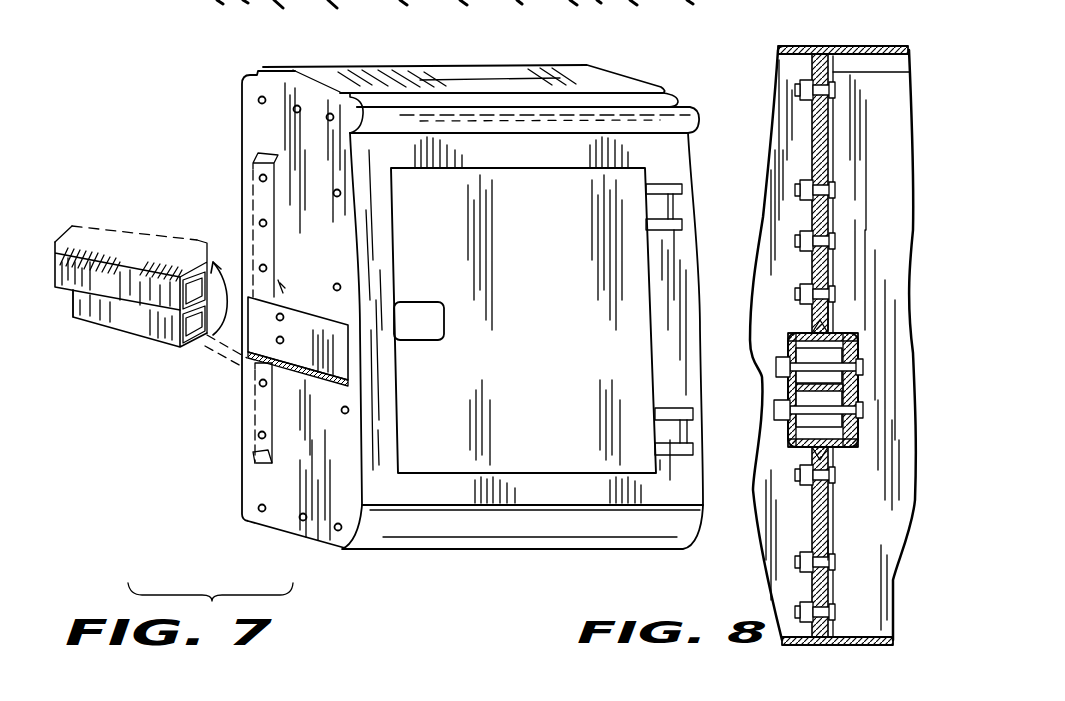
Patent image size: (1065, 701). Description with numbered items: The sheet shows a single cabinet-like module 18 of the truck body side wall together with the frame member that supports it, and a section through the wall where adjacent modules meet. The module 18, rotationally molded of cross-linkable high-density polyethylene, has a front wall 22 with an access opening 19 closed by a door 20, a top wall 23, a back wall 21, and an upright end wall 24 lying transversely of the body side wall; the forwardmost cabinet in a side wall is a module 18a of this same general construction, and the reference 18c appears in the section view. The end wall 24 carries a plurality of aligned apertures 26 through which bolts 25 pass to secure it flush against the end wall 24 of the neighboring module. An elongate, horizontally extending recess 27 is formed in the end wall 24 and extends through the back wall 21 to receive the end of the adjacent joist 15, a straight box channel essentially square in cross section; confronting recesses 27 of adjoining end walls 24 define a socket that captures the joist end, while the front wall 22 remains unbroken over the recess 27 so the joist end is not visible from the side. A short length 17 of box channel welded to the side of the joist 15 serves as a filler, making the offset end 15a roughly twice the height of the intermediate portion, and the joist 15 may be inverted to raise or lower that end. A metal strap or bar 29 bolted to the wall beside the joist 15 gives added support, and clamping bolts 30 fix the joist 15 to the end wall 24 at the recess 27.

In FIG. 7, the joist 15 is at (110, 282).
In FIG. 8, the joist 15 is at (802, 433).
In FIG. 7, the offset end 15a is at (96, 326).
In FIG. 7, the short length of box channel 17 is at (165, 325).
In FIG. 7, the module 18 is at (418, 72).
In FIG. 7, the forward module 18a is at (628, 50).
In FIG. 8, the forward module 18a is at (897, 50).
In FIG. 8, the cabinet rear wall 18c is at (789, 46).
In FIG. 7, the access opening 19 is at (400, 430).
In FIG. 7, the door 20 is at (575, 311).
In FIG. 8, the back wall 21 is at (860, 66).
In FIG. 7, the front wall 22 is at (432, 494).
In FIG. 7, the top wall 23 is at (503, 73).
In FIG. 7, the end wall 24 is at (255, 118).
In FIG. 8, the end wall 24 is at (828, 137).
In FIG. 8, the bolt 25 is at (797, 90).
In FIG. 7, the aperture 26 is at (303, 521).
In FIG. 8, the aperture 26 is at (828, 550).
In FIG. 7, the recess 27 is at (250, 355).
In FIG. 8, the recess 27 is at (782, 350).
In FIG. 7, the strap or bar 29 is at (250, 453).
In FIG. 8, the strap or bar 29 is at (837, 313).
In FIG. 8, the bolt 30 is at (863, 415).